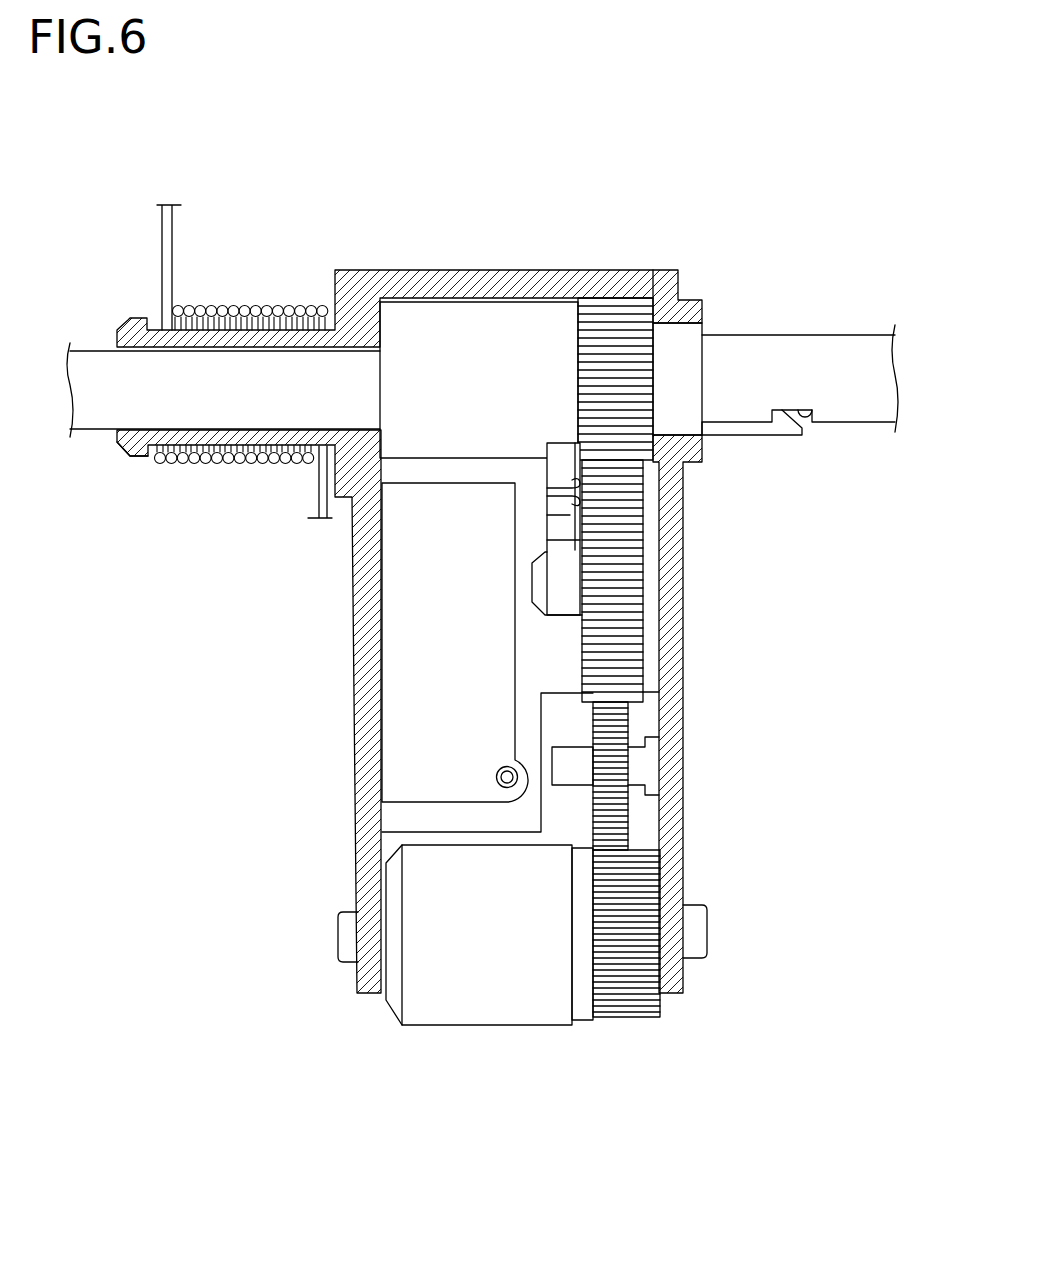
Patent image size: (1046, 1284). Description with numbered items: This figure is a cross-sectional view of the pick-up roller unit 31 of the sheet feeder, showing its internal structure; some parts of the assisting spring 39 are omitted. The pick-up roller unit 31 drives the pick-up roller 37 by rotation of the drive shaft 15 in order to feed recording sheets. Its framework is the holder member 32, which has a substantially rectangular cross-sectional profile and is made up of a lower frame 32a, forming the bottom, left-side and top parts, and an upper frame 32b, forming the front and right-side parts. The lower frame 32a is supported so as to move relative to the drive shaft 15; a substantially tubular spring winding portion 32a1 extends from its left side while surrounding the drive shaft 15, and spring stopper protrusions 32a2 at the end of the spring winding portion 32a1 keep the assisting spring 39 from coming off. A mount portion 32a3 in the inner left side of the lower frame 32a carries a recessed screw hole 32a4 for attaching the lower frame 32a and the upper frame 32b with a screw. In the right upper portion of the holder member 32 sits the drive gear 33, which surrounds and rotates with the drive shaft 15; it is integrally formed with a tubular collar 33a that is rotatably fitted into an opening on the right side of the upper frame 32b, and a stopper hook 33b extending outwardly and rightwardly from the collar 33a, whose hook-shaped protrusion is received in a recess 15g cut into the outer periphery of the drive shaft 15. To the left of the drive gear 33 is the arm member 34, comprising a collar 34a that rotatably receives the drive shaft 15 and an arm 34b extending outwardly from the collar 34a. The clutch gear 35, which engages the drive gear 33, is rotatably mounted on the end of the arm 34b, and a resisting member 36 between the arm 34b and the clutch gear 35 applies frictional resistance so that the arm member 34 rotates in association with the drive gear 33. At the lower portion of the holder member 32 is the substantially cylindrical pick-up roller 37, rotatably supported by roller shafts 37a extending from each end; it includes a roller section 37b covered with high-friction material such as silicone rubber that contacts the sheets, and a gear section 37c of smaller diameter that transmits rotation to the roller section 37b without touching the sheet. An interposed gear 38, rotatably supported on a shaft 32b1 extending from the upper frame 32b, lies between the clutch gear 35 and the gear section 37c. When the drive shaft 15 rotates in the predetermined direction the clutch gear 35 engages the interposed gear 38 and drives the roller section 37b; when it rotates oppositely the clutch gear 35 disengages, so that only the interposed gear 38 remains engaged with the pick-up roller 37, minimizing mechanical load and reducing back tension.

The drive shaft 15 is at (800, 332).
The recess 15g is at (812, 414).
The pick-up roller unit 31 is at (601, 103).
The holder member 32 is at (604, 221).
The lower frame 32a is at (398, 272).
The spring winding portion 32a1 is at (230, 430).
The spring stopper protrusions 32a2 is at (127, 447).
The mount portion 32a3 is at (395, 667).
The screw hole 32a4 is at (497, 775).
The upper frame 32b is at (677, 525).
The shaft 32b1 is at (652, 760).
The drive gear 33 is at (590, 373).
The collar 33a is at (688, 368).
The stopper hook 33b is at (745, 430).
The arm member 34 is at (521, 529).
The collar 34a is at (395, 386).
The arm 34b is at (560, 598).
The clutch gear 35 is at (590, 670).
The resisting member 36 is at (566, 477).
The pick-up roller 37 is at (487, 1135).
The roller shafts 37a is at (345, 938).
The roller section 37b is at (435, 1022).
The gear section 37c is at (625, 1012).
The interposed gear 38 is at (606, 812).
The assisting spring 39 is at (178, 237).